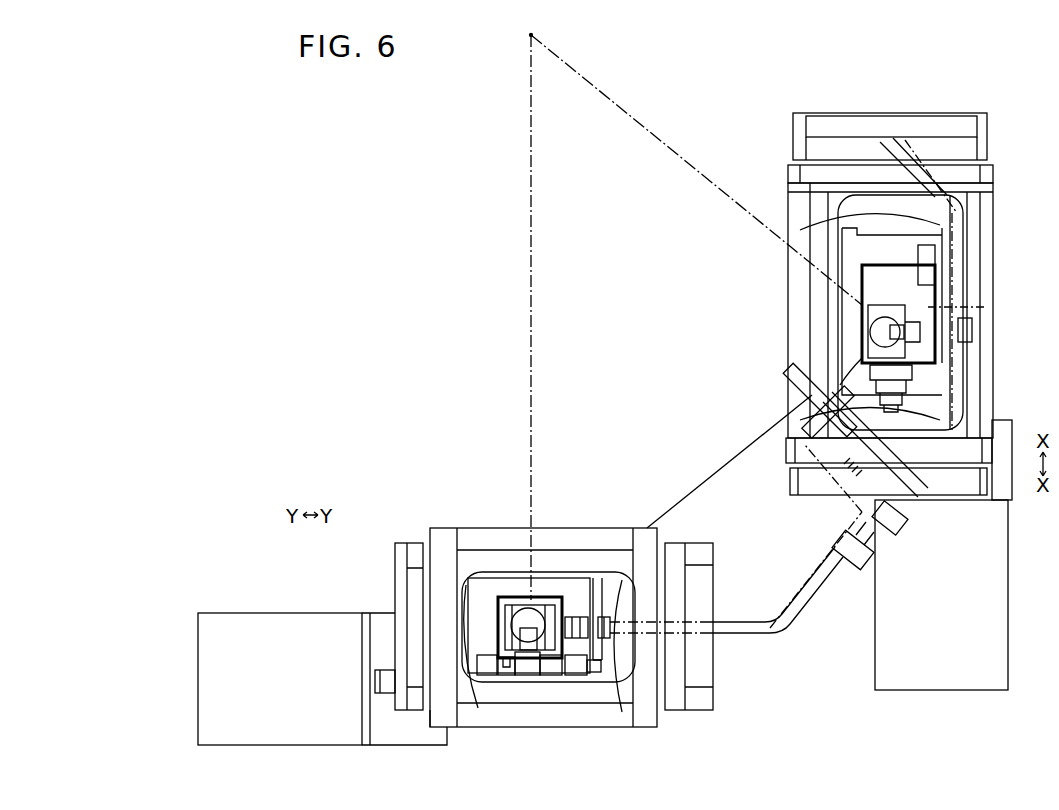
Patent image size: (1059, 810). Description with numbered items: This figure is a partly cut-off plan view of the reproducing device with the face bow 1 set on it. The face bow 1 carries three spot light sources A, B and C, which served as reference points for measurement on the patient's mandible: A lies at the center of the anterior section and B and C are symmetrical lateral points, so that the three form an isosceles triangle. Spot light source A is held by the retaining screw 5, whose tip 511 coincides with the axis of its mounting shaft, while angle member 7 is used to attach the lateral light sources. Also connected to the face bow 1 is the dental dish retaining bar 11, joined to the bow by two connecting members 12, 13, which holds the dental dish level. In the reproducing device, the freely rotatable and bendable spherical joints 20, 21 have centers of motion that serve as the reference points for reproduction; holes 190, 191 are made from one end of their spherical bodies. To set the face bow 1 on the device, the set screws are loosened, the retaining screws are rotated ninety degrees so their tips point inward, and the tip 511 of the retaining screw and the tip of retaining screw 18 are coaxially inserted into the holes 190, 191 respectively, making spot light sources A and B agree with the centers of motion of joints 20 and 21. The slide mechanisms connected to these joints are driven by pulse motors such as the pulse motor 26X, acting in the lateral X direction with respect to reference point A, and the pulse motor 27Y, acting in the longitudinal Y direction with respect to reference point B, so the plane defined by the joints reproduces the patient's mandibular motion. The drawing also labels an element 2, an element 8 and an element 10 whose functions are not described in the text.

The face bow 1 is at (808, 600).
The light beam axis 2 is at (541, 326).
The retaining screw 5 is at (980, 308).
The angle member 7 is at (578, 672).
The scanner housing 8 is at (820, 240).
The mount 10 is at (512, 675).
The dental dish retaining bar 11 is at (800, 390).
The connecting member 12 is at (857, 511).
The connecting member 13 is at (790, 430).
The retaining screw 18 is at (506, 636).
The spherical joint 20 is at (858, 263).
The spherical joint 21 is at (480, 588).
The pulse motor 26X is at (948, 682).
The pulse motor 27Y is at (276, 630).
The hole 190 is at (892, 292).
The hole 191 is at (600, 600).
The tip of the retaining screw 511 is at (845, 370).
The spot light source A is at (868, 340).
The spot light source B is at (516, 590).
The spot light source C is at (531, 35).